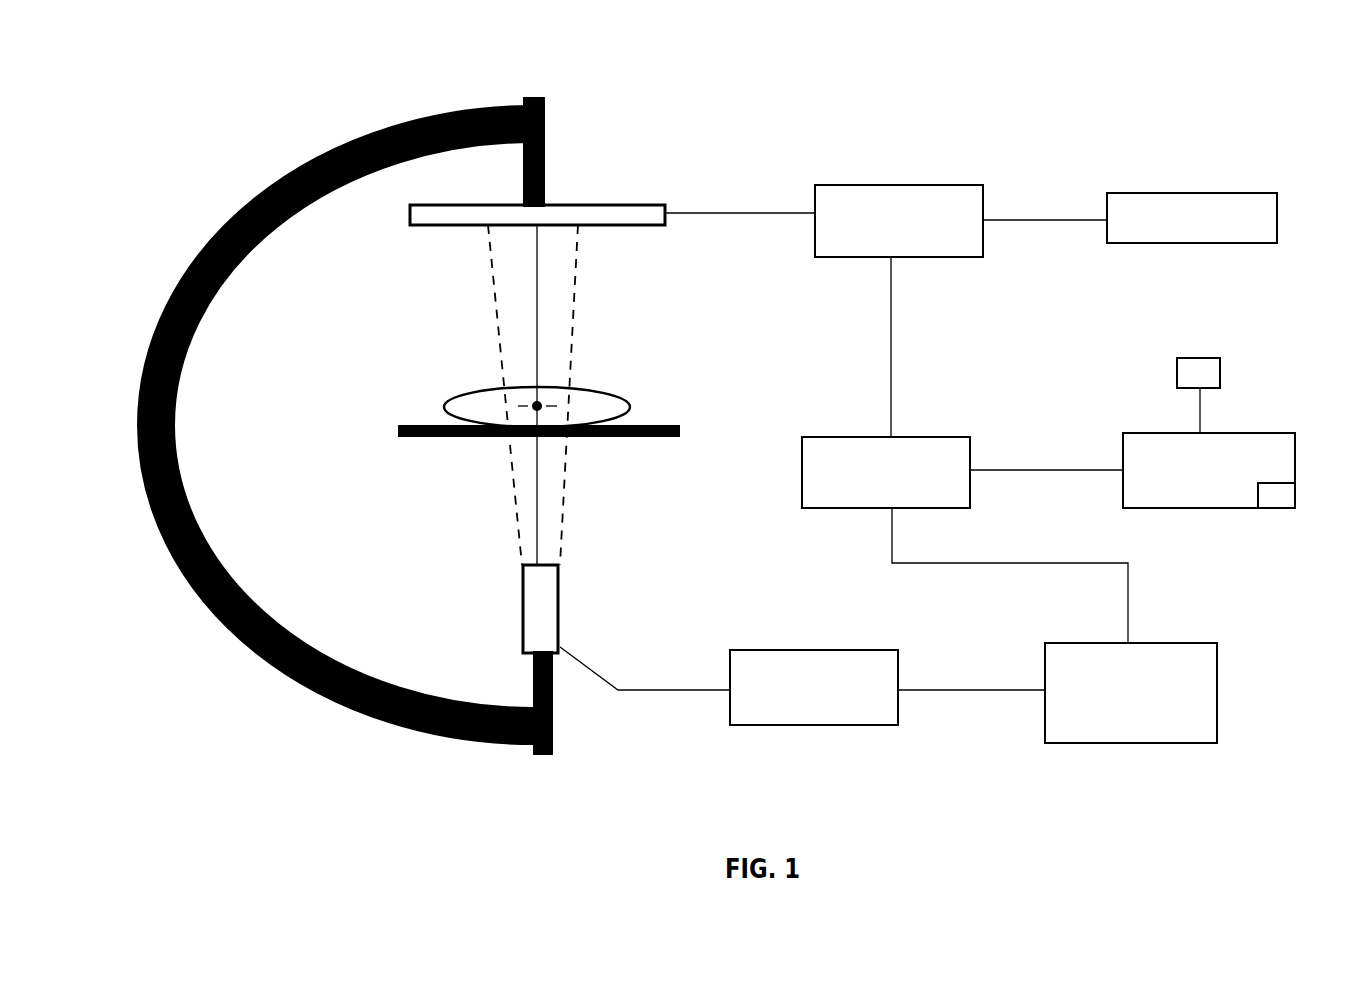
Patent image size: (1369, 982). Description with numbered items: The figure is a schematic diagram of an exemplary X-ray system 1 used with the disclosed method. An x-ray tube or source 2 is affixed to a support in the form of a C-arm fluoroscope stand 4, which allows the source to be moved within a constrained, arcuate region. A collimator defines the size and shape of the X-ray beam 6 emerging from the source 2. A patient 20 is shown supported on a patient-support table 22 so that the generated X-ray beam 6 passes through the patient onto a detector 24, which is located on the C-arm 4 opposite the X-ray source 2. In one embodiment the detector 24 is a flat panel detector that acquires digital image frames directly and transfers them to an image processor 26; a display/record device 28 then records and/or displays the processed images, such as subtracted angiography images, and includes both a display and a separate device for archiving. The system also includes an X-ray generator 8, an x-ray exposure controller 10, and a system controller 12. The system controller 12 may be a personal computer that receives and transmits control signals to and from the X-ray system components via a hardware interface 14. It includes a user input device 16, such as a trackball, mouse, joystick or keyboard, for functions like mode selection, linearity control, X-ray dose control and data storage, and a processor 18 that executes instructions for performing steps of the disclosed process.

The X-ray system 1 is at (709, 120).
The x-ray tube or source 2 is at (560, 608).
The C-arm fluoroscope stand 4 is at (250, 213).
The X-ray beam 6 is at (563, 492).
The X-ray generator 8 is at (903, 728).
The x-ray exposure controller 10 is at (1223, 747).
The system controller 12 is at (1213, 512).
The hardware interface 14 is at (978, 435).
The user input device 16 is at (1223, 375).
The processor 18 is at (1278, 500).
The patient 20 is at (620, 393).
The patient-support table 22 is at (660, 437).
The detector 24 is at (635, 222).
The image processor 26 is at (985, 182).
The display/record device 28 is at (1280, 193).